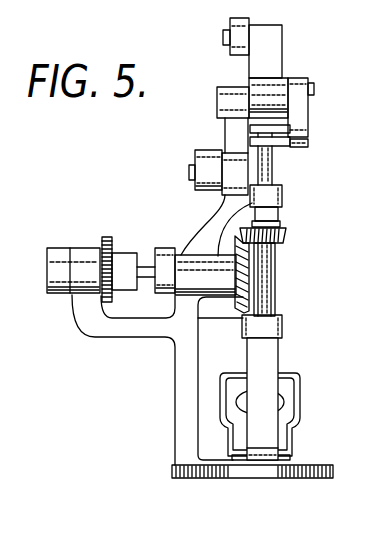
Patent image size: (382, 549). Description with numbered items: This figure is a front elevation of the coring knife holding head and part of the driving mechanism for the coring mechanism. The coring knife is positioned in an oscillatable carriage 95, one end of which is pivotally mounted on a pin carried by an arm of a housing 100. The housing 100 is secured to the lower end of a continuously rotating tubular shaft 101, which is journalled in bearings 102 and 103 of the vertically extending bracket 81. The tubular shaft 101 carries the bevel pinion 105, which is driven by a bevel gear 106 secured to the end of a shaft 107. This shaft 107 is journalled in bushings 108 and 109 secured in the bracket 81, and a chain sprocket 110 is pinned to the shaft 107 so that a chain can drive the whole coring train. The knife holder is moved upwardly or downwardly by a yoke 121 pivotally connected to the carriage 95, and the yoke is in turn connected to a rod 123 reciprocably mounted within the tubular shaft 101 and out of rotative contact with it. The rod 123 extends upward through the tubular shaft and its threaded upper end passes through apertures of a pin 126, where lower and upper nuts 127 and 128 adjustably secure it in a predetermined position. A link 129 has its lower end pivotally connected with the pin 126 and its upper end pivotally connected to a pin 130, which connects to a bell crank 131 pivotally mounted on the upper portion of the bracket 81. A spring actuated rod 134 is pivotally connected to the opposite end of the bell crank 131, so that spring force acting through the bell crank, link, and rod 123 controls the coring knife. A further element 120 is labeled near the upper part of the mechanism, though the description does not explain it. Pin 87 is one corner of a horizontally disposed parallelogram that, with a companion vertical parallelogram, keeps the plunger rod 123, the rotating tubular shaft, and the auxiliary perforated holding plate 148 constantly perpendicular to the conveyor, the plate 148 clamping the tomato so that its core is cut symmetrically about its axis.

The vertically extending bracket 81 is at (233, 126).
The pin 87 is at (189, 173).
The oscillatable carriage 95 is at (290, 433).
The housing 100 is at (281, 362).
The tubular shaft 101 is at (275, 298).
The bearing 102 is at (282, 327).
The bearing 103 is at (282, 202).
The bevel pinion 105 is at (283, 240).
The bevel gear 106 is at (250, 264).
The shaft 107 is at (143, 263).
The bushing 108 is at (167, 252).
The bushing 109 is at (82, 246).
The chain sprocket 110 is at (97, 305).
The pin 120 is at (223, 34).
The yoke 121 is at (297, 383).
The rod 123 is at (273, 172).
The pin 126 is at (313, 140).
The lower nut 127 is at (275, 147).
The upper nut 128 is at (267, 113).
The link 129 is at (305, 110).
The pin 130 is at (314, 88).
The bell crank 131 is at (270, 52).
The spring actuated rod 134 is at (240, 20).
The auxiliary perforated holding plate 148 is at (325, 468).